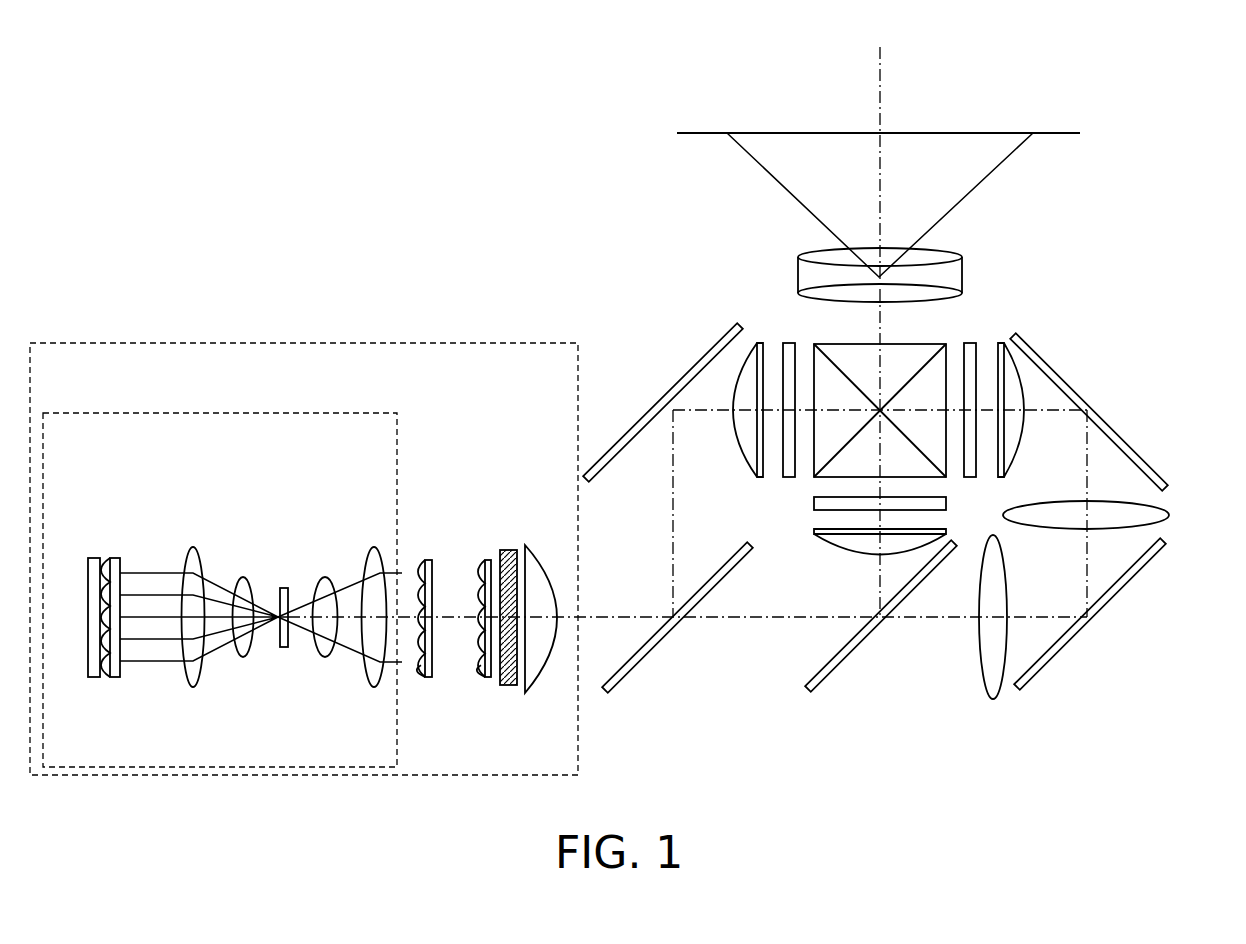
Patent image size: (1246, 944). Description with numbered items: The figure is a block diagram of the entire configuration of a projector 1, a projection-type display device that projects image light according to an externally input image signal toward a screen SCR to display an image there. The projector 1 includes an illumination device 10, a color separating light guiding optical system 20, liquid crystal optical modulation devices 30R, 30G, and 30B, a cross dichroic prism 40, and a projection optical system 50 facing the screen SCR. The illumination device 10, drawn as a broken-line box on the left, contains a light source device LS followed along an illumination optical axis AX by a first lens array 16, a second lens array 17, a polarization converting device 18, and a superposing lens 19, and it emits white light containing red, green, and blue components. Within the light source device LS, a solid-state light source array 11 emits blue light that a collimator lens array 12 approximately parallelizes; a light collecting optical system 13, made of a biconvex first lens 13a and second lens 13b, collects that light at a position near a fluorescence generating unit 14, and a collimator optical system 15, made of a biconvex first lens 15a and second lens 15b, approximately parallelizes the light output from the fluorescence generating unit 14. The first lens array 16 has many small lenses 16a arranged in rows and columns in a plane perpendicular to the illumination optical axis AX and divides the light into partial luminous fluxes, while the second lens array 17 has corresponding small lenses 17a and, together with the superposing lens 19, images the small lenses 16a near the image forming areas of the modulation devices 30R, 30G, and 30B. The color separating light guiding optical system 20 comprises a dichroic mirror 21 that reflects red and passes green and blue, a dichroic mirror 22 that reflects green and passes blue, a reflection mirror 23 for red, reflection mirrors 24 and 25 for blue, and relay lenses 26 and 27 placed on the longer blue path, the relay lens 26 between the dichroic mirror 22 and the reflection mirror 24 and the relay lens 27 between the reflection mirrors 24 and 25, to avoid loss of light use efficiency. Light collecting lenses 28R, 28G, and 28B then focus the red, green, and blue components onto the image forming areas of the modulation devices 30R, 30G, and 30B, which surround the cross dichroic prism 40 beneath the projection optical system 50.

The projector 1 is at (450, 205).
The illumination device 10 is at (315, 342).
The light source device LS is at (228, 412).
The solid-state light source array 11 is at (92, 556).
The collimator lens array 12 is at (115, 556).
The light collecting optical system 13 is at (173, 500).
The first lens 13a is at (193, 547).
The second lens 13b is at (243, 576).
The fluorescence generating unit 14 is at (284, 587).
The collimator optical system 15 is at (302, 500).
The first lens 15a is at (325, 576).
The second lens 15b is at (374, 546).
The first lens array 16 is at (426, 559).
The small lens 16a is at (422, 678).
The second lens array 17 is at (487, 559).
The small lens 17a is at (482, 678).
The polarization converting device 18 is at (508, 549).
The superposing lens 19 is at (537, 545).
The illumination optical axis AX is at (612, 615).
The color separating light guiding optical system 20 is at (852, 752).
The dichroic mirror 21 is at (633, 675).
The dichroic mirror 22 is at (860, 657).
The reflection mirror 23 is at (617, 435).
The reflection mirror 24 is at (1047, 673).
The reflection mirror 25 is at (1140, 447).
The relay lens 26 is at (987, 700).
The relay lens 27 is at (1170, 515).
The light collecting lens 28R is at (757, 340).
The light collecting lens 28G is at (817, 536).
The light collecting lens 28B is at (1005, 342).
The liquid crystal optical modulation device 30R is at (789, 342).
The liquid crystal optical modulation device 30G is at (814, 503).
The liquid crystal optical modulation device 30B is at (972, 342).
The cross dichroic prism 40 is at (900, 344).
The projection optical system 50 is at (962, 258).
The screen SCR is at (1070, 137).